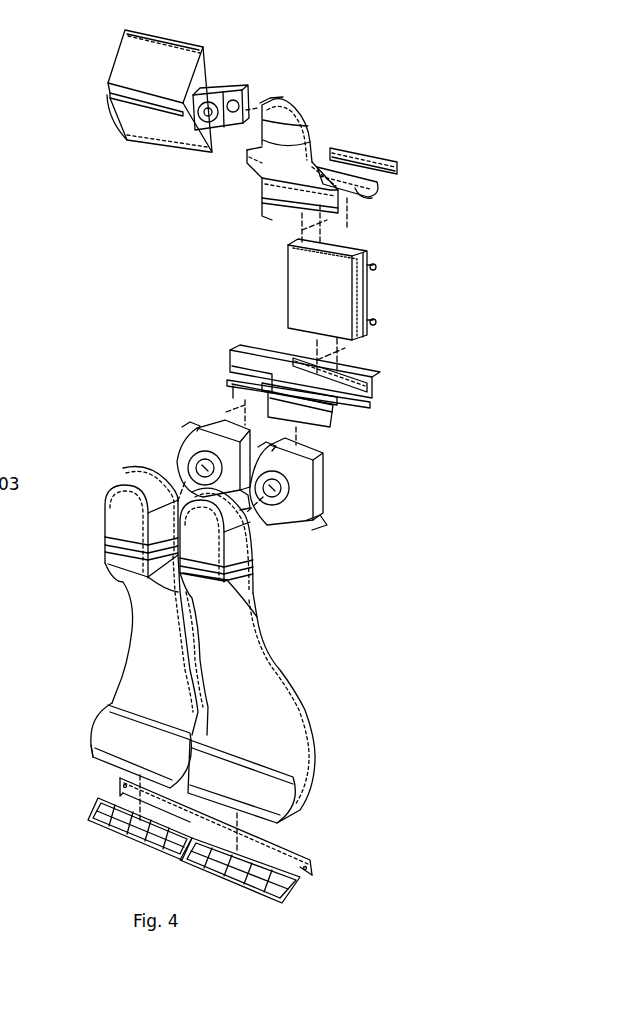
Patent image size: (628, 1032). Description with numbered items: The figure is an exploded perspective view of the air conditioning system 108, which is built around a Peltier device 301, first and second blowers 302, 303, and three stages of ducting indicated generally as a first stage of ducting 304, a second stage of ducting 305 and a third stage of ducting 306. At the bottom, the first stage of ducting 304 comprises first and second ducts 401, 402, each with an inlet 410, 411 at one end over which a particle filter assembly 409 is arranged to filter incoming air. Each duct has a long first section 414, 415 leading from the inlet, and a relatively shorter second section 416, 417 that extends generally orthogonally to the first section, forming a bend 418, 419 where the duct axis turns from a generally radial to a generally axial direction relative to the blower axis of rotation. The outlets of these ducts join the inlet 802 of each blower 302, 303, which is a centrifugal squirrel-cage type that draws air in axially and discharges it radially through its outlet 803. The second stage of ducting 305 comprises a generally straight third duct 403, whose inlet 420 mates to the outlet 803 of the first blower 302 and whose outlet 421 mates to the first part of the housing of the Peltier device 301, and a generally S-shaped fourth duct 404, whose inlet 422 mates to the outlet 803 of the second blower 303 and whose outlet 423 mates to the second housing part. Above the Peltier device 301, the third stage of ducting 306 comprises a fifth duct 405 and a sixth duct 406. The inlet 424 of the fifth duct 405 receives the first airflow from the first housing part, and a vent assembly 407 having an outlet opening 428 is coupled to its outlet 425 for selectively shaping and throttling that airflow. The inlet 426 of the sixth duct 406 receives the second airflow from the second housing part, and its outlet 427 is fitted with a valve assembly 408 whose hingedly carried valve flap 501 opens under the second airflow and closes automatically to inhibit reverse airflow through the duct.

The air conditioning system 108 is at (500, 100).
The Peltier device 301 is at (404, 297).
The first blower 302 is at (305, 487).
The second blower 303 is at (192, 445).
The first stage of ducting 304 is at (452, 703).
The second stage of ducting 305 is at (455, 402).
The third stage of ducting 306 is at (532, 183).
The first duct 401 is at (250, 656).
The second duct 402 is at (135, 648).
The third duct 403 is at (322, 410).
The fourth duct 404 is at (240, 371).
The fifth duct 405 is at (265, 178).
The sixth duct 406 is at (372, 190).
The vent assembly 407 is at (132, 65).
The valve assembly 408 is at (372, 134).
The particle filter assembly 409 is at (105, 812).
The inlet of first duct 410 is at (262, 832).
The inlet of second duct 411 is at (93, 757).
The first section of first duct 414 is at (306, 689).
The first section of second duct 415 is at (108, 683).
The second section of first duct 416 is at (234, 527).
The second section of second duct 417 is at (143, 484).
The bend of first duct 418 is at (226, 551).
The bend of second duct 419 is at (110, 500).
The inlet of third duct 420 is at (305, 420).
The outlet of third duct 421 is at (330, 392).
The inlet of fourth duct 422 is at (232, 390).
The outlet of fourth duct 423 is at (362, 364).
The inlet of fifth duct 424 is at (272, 219).
The outlet of fifth duct 425 is at (262, 105).
The inlet of sixth duct 426 is at (350, 205).
The outlet of sixth duct 427 is at (380, 183).
The outlet opening 428 is at (122, 98).
The valve flap 501 is at (397, 168).
The inlet 802 is at (193, 457).
The outlet 803 is at (210, 428).